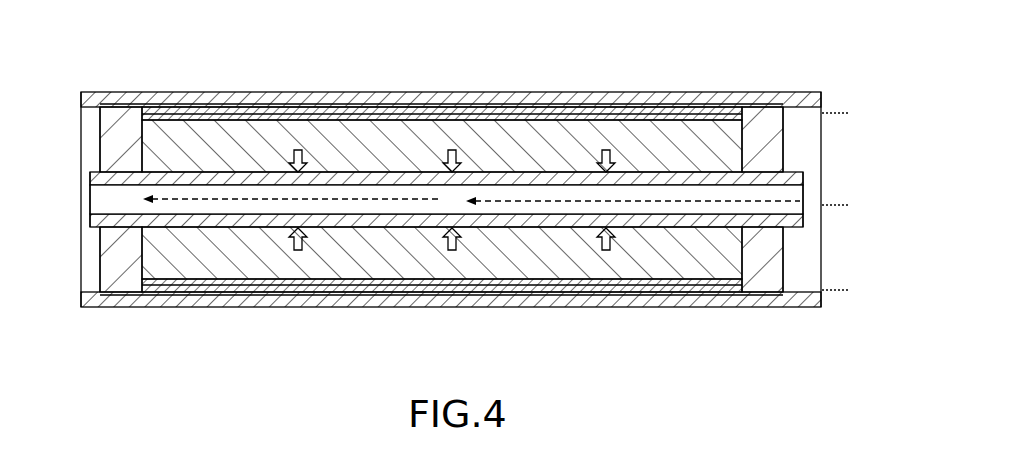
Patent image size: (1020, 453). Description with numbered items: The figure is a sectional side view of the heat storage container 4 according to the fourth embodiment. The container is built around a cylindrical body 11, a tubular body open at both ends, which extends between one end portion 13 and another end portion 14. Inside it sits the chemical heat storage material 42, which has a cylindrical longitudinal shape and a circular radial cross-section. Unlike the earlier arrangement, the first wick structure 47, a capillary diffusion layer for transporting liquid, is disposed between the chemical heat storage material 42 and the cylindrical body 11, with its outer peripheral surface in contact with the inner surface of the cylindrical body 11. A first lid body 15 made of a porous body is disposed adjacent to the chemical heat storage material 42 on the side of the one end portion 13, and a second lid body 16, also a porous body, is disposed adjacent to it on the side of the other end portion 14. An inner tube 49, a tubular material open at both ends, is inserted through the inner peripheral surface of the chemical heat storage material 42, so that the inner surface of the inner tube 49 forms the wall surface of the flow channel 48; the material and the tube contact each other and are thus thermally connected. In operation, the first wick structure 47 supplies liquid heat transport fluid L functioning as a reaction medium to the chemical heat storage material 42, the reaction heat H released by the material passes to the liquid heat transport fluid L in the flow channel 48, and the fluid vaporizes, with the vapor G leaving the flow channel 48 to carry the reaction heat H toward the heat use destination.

The heat storage container 4 is at (537, 82).
The cylindrical body 11 is at (665, 93).
The one end portion 13 is at (822, 136).
The another end portion 14 is at (82, 128).
The first lid body 15 is at (760, 130).
The second lid body 16 is at (126, 106).
The chemical heat storage material 42 is at (483, 135).
The first wick structure 47 is at (599, 107).
The flow channel 48 is at (790, 208).
The inner tube 49 is at (517, 120).
The vapor of heat transport fluid G is at (374, 195).
The reaction heat H is at (298, 150).
The liquid heat transport fluid L is at (700, 112).